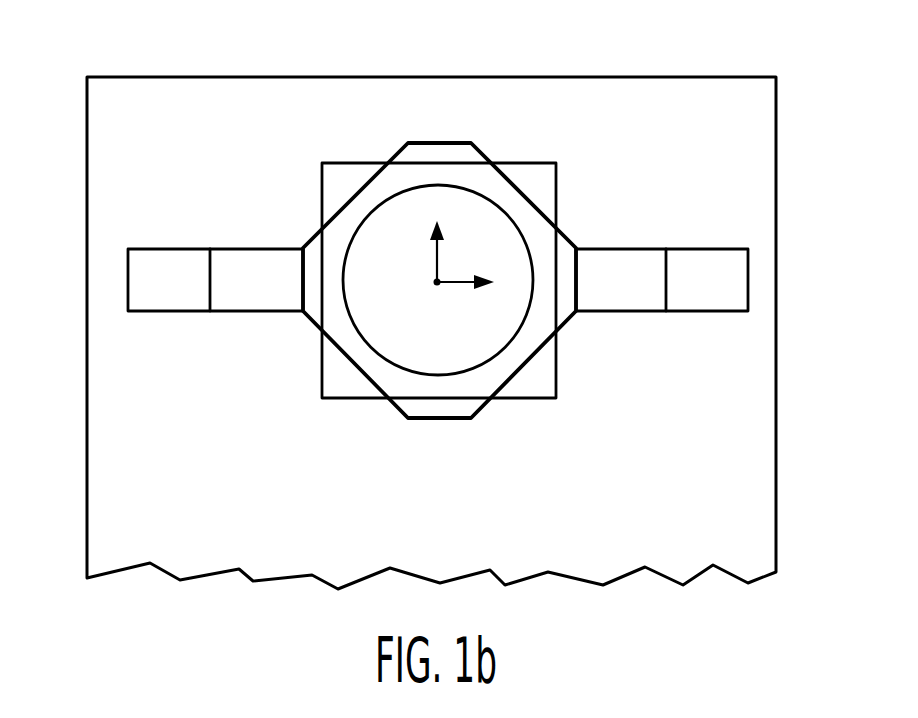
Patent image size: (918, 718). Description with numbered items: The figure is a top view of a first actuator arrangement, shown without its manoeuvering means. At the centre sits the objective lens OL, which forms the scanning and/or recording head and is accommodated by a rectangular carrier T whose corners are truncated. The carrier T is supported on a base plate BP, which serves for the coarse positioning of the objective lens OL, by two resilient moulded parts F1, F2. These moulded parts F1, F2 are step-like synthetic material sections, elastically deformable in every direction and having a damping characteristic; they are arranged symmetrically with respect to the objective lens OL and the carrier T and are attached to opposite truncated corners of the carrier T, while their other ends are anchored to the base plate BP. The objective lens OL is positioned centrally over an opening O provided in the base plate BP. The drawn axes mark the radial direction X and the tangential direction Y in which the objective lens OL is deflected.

The base plate BP is at (752, 492).
The opening O is at (345, 162).
The carrier T is at (462, 150).
The objective lens OL is at (494, 222).
The resilient moulded part F1 is at (153, 248).
The resilient moulded part F2 is at (727, 250).
The radial direction X is at (465, 299).
The tangential direction Y is at (445, 250).